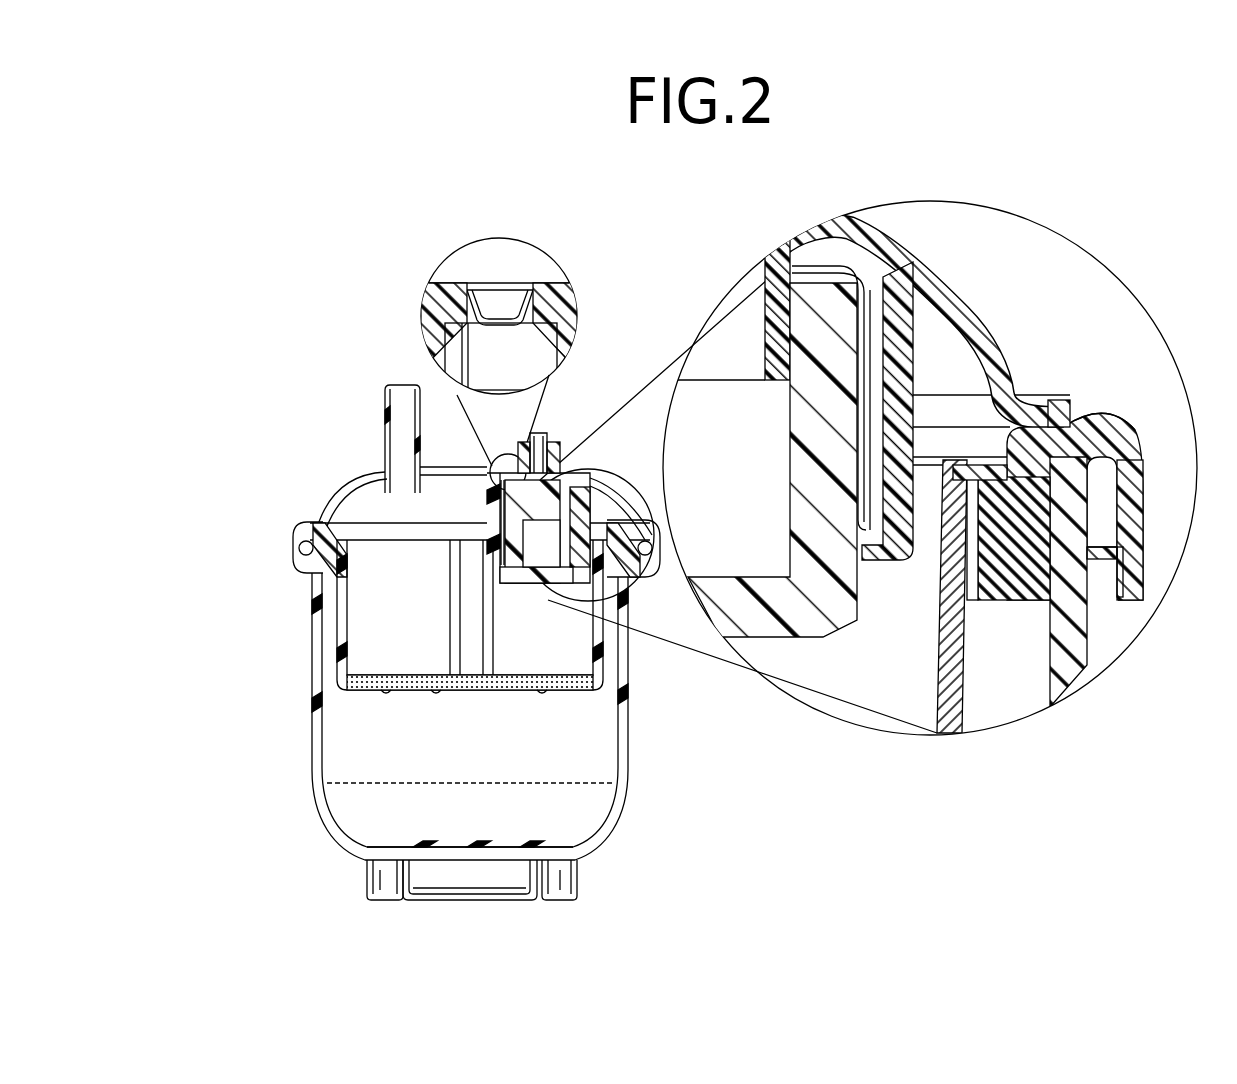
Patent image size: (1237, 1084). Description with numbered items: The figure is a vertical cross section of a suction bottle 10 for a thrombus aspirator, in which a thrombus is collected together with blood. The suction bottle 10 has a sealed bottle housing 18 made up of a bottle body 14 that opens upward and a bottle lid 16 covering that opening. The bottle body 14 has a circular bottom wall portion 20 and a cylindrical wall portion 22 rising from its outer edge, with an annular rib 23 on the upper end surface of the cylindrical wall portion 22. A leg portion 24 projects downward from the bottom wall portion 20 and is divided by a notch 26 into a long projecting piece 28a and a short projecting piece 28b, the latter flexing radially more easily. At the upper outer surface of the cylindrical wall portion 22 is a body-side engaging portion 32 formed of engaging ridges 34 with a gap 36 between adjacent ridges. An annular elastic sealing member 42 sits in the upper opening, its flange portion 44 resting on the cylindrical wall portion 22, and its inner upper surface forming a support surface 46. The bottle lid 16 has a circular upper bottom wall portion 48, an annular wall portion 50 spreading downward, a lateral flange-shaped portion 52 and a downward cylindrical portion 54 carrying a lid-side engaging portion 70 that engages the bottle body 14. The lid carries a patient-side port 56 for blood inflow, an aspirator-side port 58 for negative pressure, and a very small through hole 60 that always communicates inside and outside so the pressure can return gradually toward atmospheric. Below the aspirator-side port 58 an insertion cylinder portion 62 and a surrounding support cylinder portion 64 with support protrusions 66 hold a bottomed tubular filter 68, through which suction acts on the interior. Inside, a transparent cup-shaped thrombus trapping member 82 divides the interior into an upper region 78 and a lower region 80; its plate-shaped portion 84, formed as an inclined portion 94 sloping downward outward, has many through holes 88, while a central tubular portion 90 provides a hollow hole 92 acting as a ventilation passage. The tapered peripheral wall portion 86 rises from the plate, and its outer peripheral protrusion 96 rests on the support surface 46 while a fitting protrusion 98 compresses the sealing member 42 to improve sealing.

The suction bottle 10 is at (305, 440).
The bottle body 14 is at (307, 617).
The bottle lid 16 is at (293, 563).
The bottle housing 18 is at (257, 613).
The bottom wall portion 20 is at (477, 853).
The cylindrical wall portion 22 is at (320, 756).
The annular rib 23 is at (1070, 453).
The leg portion 24 is at (365, 878).
The notch 26 is at (403, 897).
The long projecting piece 28a is at (463, 883).
The short projecting piece 28b is at (388, 880).
The body-side engaging portion 32 is at (1100, 603).
The engaging ridge 34 is at (1107, 580).
The gap 36 is at (298, 550).
The sealing member 42 is at (313, 520).
The flange portion 44 is at (1087, 447).
The support surface 46 is at (972, 525).
The upper bottom wall portion 48 is at (463, 470).
The annular wall portion 50 is at (350, 497).
The flange-shaped portion 52 is at (1048, 400).
The cylindrical portion 54 is at (1133, 520).
The patient-side port 56 is at (386, 418).
The aspirator-side port 58 is at (542, 450).
The through hole 60 is at (500, 292).
The insertion cylinder portion 62 is at (530, 470).
The support cylinder portion 64 is at (590, 507).
The support protrusion 66 is at (860, 545).
The filter 68 is at (547, 580).
The lid-side engaging portion 70 is at (1127, 587).
The upper region 78 is at (353, 665).
The lower region 80 is at (592, 762).
The thrombus trapping member 82 is at (608, 678).
The plate-shaped portion 84 is at (497, 692).
The peripheral wall portion 86 is at (345, 600).
The through hole 88 is at (386, 693).
The tubular portion 90 is at (457, 573).
The hollow hole 92 is at (470, 553).
The inclined portion 94 is at (435, 663).
The outer peripheral protrusion 96 is at (993, 477).
The fitting protrusion 98 is at (1003, 540).